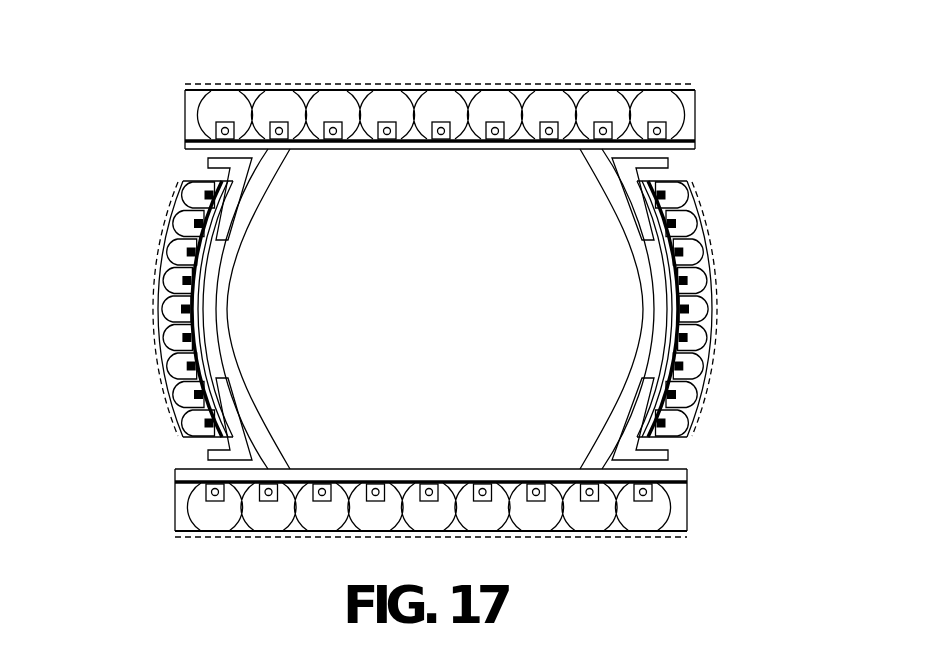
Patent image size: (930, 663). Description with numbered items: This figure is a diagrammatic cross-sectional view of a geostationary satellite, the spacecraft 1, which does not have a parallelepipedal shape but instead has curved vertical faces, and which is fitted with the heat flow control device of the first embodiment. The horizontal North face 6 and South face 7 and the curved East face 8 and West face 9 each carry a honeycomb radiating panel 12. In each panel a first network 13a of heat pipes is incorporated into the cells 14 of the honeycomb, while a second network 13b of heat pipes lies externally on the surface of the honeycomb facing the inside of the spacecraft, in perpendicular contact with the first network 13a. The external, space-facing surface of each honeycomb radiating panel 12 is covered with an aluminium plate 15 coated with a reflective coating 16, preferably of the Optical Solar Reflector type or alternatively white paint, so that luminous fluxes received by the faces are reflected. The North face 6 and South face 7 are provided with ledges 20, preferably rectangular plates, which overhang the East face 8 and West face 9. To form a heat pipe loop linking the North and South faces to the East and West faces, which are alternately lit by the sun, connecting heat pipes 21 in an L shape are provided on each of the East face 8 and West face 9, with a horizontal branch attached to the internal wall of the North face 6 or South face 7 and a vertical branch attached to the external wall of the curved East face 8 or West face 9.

The spacecraft 1 is at (165, 98).
The North face 6 is at (406, 150).
The South face 7 is at (442, 469).
The East face 8 is at (644, 304).
The West face 9 is at (228, 286).
The honeycomb radiating panel 12 is at (697, 106).
The first network of heat pipes 13a is at (548, 126).
The second network of heat pipes 13b is at (698, 142).
The cells of the honeycomb 14 is at (410, 92).
The aluminium plate 15 is at (311, 92).
The reflective coating 16 is at (236, 84).
The ledges 20 is at (697, 151).
The connecting heat pipes 21 is at (254, 193).